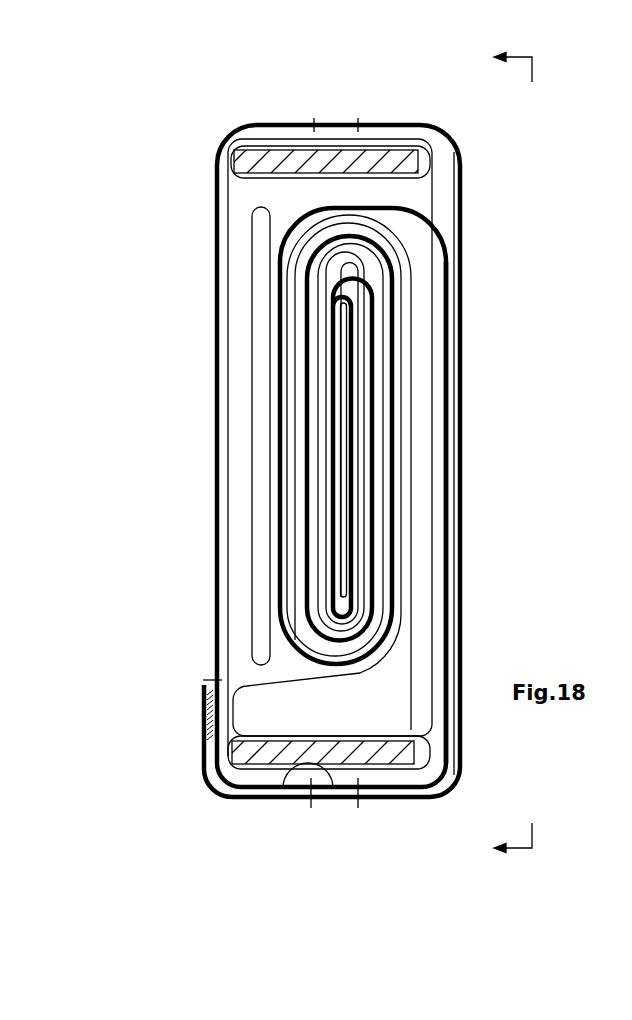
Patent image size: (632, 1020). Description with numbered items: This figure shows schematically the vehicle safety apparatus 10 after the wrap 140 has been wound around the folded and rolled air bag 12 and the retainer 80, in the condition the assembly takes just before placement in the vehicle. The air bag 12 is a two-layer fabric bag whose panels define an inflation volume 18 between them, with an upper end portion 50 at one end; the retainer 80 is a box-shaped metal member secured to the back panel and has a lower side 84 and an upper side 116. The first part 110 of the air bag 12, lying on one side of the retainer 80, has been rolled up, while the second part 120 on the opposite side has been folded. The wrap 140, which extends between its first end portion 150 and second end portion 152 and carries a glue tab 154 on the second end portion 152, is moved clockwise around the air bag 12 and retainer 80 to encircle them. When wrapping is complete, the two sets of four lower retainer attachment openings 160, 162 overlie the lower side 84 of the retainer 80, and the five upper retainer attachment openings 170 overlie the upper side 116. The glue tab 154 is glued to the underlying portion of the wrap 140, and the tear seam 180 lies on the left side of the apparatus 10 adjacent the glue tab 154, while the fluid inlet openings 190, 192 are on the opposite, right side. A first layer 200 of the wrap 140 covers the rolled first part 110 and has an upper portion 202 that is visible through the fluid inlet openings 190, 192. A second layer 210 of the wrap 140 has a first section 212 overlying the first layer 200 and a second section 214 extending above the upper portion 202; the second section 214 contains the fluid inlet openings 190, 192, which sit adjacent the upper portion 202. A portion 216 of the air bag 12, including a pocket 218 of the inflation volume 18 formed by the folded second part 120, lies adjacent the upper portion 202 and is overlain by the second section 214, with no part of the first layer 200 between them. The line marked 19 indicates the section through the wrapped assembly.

The vehicle safety apparatus 10 is at (185, 392).
The air bag 12 is at (218, 487).
The inflation volume 18 is at (244, 227).
The section line 19 is at (493, 454).
The upper end portion 50 is at (243, 598).
The retainer 80 is at (278, 138).
The lower side 84 is at (388, 756).
The first part 110 is at (400, 673).
The upper side 116 is at (366, 156).
The second part 120 is at (212, 532).
The wrap 140 is at (205, 437).
The first end portion 150 is at (346, 310).
The second end portion 152 is at (206, 772).
The glue tab 154 is at (204, 684).
The lower retainer attachment openings 160 is at (338, 800).
The lower retainer attachment openings 162 is at (290, 762).
The upper retainer attachment openings 170 is at (326, 121).
The tear seam 180 is at (212, 668).
The fluid inlet opening 190 is at (360, 468).
The fluid inlet opening 192 is at (403, 208).
The first layer 200 is at (458, 609).
The upper portion 202 is at (470, 243).
The second layer 210 is at (470, 565).
The first section 212 is at (460, 510).
The second section 214 is at (470, 178).
The portion 216 is at (226, 152).
The pocket 218 is at (243, 205).